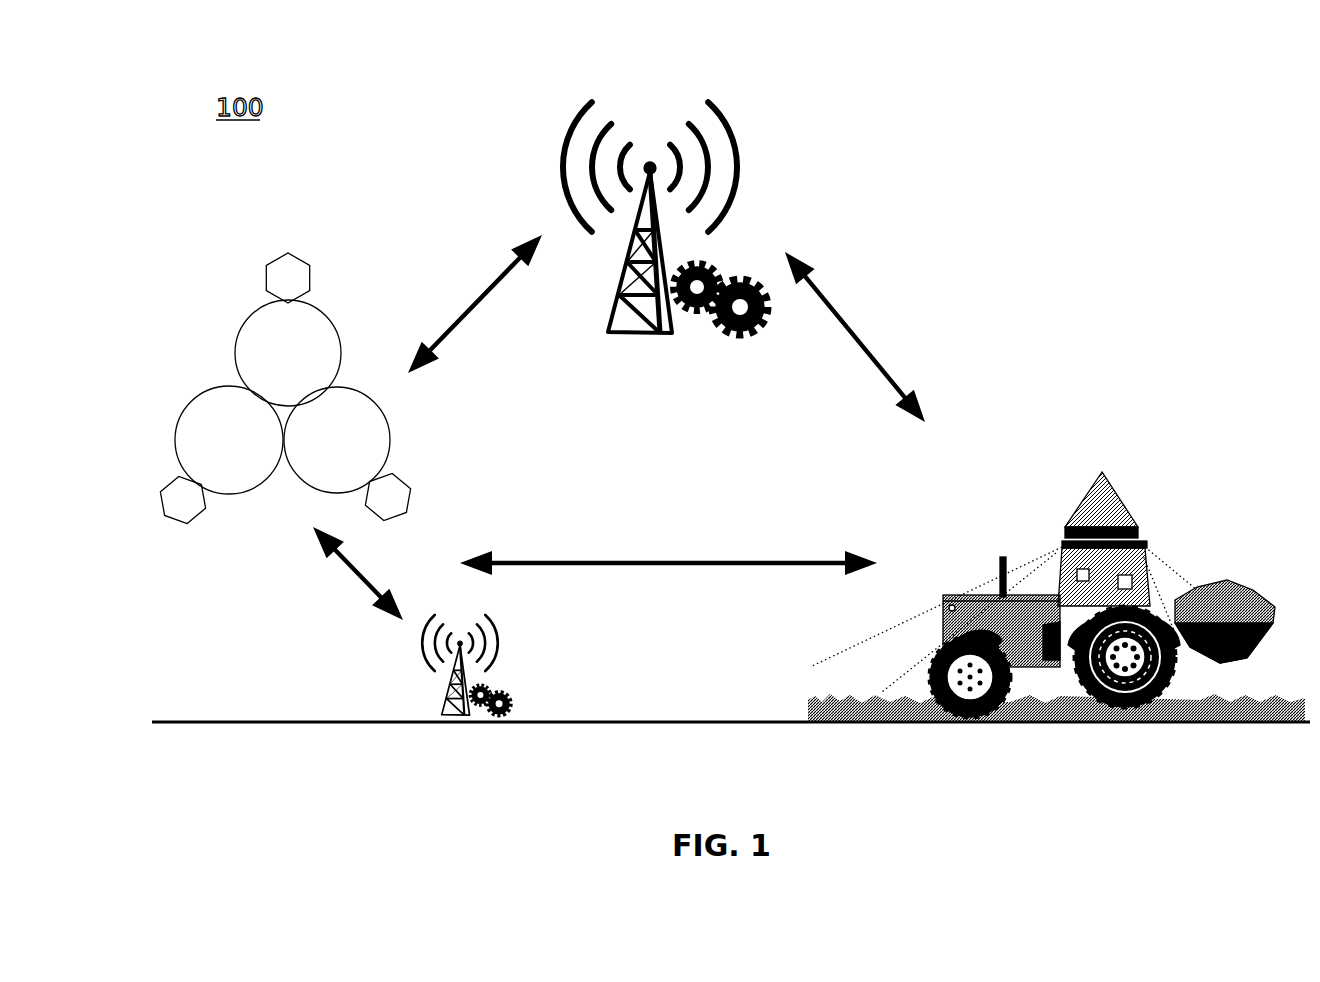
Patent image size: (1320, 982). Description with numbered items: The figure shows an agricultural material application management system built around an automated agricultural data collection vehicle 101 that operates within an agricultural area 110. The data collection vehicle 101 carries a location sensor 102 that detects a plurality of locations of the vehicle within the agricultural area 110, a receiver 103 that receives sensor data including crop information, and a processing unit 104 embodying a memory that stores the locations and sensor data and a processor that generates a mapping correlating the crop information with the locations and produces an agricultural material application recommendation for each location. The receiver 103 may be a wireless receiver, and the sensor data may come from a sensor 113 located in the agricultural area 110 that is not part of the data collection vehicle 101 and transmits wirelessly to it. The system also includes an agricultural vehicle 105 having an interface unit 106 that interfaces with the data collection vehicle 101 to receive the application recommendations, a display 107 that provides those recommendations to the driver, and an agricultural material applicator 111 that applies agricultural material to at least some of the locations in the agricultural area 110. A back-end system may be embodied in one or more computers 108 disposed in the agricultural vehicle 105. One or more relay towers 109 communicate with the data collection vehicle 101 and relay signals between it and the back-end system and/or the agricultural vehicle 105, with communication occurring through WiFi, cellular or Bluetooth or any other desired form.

The automated agricultural data collection vehicle 101 is at (390, 430).
The location sensor 102 is at (182, 525).
The receiver 103 is at (310, 278).
The processing unit 104 is at (411, 497).
The agricultural vehicle 105 is at (968, 541).
The interface unit 106 is at (1108, 480).
The display 107 is at (1137, 567).
The computers 108 is at (1062, 560).
The relay tower 109 is at (740, 175).
The agricultural area 110 is at (213, 720).
The agricultural material applicator 111 is at (1238, 583).
The sensor 113 is at (497, 653).